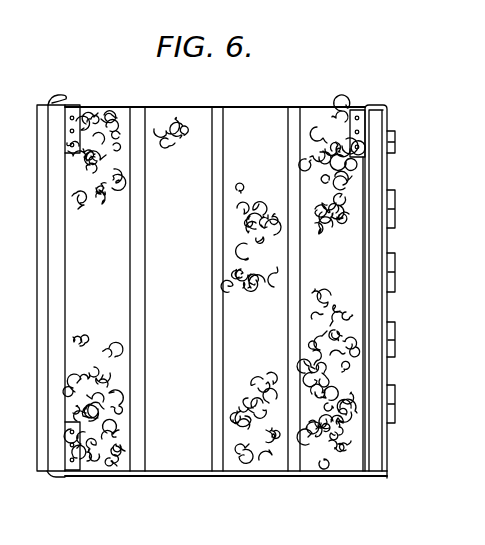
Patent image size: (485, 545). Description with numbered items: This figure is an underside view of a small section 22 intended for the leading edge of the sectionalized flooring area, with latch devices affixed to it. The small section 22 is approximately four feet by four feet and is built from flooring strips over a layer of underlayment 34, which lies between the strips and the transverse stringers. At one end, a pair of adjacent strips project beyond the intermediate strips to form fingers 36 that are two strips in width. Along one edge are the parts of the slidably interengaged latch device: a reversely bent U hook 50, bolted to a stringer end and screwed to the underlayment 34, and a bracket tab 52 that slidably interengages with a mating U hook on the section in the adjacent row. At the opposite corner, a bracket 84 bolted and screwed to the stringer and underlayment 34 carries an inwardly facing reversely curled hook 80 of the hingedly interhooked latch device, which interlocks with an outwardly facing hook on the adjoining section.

The small section 22 is at (267, 127).
The underlayment 34 is at (186, 262).
The projecting finger 36 is at (395, 150).
The U hook 50 is at (55, 93).
The tab 52 is at (53, 478).
The reversely curled hook 80 is at (387, 107).
The bracket 84 is at (352, 122).